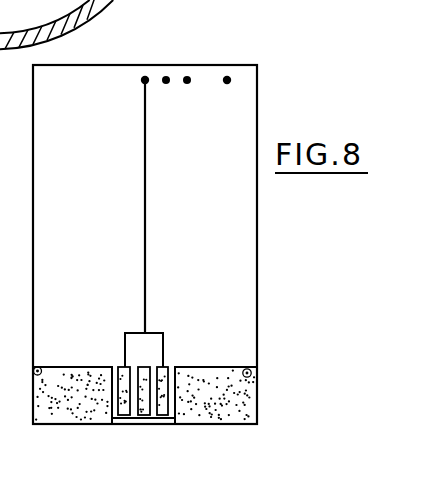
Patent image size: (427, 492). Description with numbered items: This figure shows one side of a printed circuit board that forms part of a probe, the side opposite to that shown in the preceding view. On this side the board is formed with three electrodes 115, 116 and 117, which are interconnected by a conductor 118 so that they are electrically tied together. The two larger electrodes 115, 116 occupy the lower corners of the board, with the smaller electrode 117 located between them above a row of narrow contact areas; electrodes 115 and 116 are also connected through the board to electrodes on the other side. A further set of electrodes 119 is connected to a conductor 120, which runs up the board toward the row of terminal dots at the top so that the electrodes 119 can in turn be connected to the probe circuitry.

The electrode 115 is at (56, 366).
The electrode 116 is at (230, 367).
The electrode 117 is at (143, 367).
The conductor 118 is at (165, 418).
The electrodes 119 is at (158, 418).
The conductor 120 is at (143, 220).